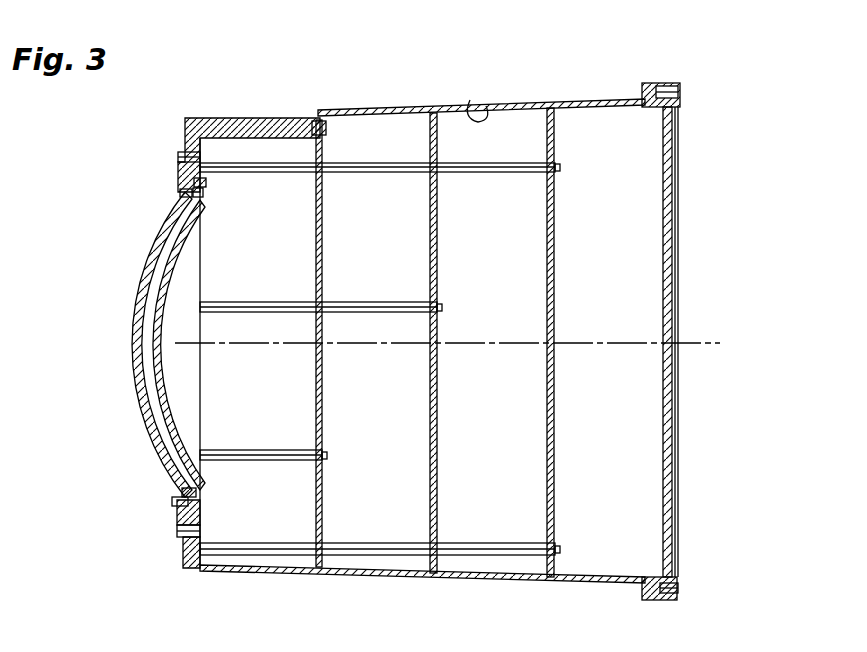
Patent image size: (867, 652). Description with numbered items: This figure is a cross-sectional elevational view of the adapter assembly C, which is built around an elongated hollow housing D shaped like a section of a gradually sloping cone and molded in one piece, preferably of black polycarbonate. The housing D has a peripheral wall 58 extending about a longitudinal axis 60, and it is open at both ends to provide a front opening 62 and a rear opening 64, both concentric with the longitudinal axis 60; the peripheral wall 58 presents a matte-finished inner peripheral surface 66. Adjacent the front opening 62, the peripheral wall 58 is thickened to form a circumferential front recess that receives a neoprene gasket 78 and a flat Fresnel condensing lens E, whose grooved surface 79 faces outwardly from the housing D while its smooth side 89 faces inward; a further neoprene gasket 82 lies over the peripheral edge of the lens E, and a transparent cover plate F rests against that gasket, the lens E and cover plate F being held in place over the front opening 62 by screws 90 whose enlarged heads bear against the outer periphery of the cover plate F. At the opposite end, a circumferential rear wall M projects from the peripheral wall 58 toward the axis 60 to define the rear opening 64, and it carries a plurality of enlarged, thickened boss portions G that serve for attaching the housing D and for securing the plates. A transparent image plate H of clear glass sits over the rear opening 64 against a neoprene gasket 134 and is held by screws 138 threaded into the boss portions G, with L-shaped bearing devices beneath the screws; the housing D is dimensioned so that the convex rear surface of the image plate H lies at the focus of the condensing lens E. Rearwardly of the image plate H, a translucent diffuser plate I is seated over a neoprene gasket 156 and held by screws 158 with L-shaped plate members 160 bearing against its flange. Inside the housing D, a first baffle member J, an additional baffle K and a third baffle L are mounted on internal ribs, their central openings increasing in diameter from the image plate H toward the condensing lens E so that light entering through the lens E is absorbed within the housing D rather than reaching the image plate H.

The peripheral wall 58 is at (402, 110).
The inner peripheral surface 66 is at (470, 100).
The neoprene gasket 82 is at (672, 90).
The screws 90 is at (680, 92).
The neoprene gasket 78 is at (660, 110).
The grooved surface 79 is at (664, 130).
The front opening 62 is at (664, 250).
The longitudinal axis 60 is at (612, 318).
The smooth side 89 is at (664, 404).
The rear opening 64 is at (190, 280).
The screws 138 is at (206, 184).
The neoprene gasket 134 is at (203, 196).
The neoprene gasket 156 is at (182, 194).
The L-shaped plate members 160 is at (182, 494).
The screws 158 is at (174, 503).
The adapter assembly C is at (452, 80).
The housing D is at (552, 98).
The condensing lens E is at (664, 279).
The cover plate F is at (682, 166).
The boss portions G is at (178, 546).
The image plate H is at (166, 398).
The diffuser plate I is at (133, 370).
The first baffle member J is at (328, 250).
The additional baffle K is at (440, 246).
The third baffle L is at (546, 278).
The rear wall M is at (176, 166).